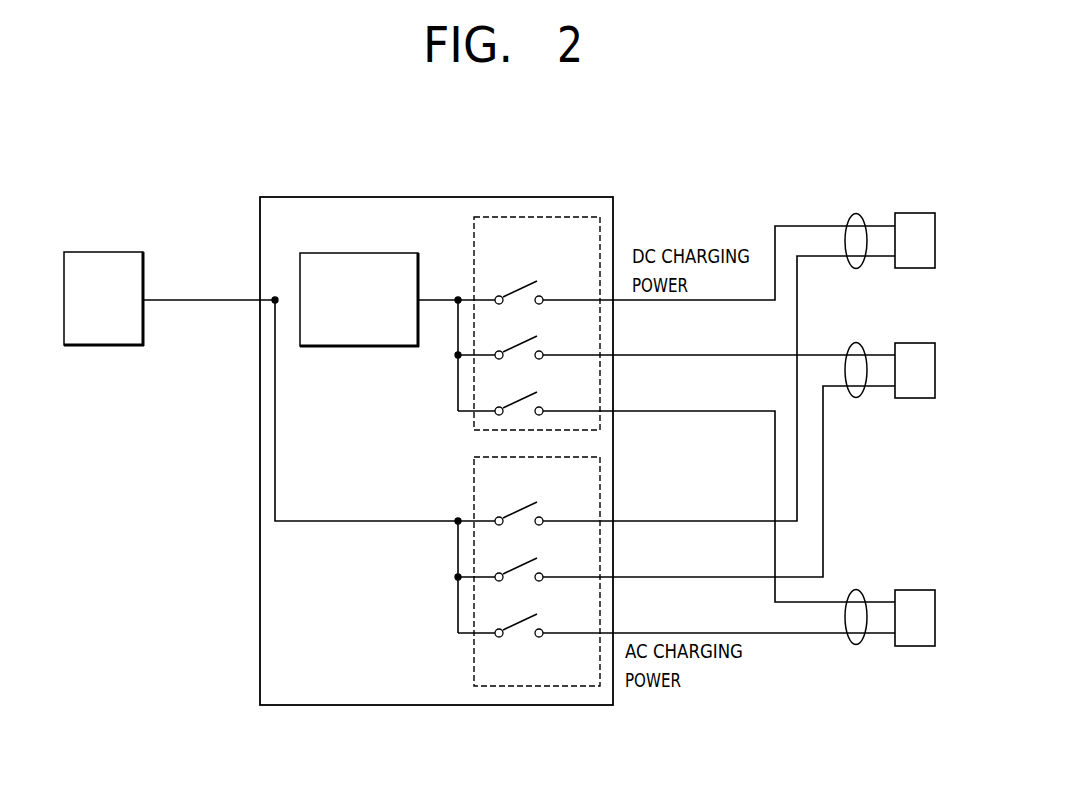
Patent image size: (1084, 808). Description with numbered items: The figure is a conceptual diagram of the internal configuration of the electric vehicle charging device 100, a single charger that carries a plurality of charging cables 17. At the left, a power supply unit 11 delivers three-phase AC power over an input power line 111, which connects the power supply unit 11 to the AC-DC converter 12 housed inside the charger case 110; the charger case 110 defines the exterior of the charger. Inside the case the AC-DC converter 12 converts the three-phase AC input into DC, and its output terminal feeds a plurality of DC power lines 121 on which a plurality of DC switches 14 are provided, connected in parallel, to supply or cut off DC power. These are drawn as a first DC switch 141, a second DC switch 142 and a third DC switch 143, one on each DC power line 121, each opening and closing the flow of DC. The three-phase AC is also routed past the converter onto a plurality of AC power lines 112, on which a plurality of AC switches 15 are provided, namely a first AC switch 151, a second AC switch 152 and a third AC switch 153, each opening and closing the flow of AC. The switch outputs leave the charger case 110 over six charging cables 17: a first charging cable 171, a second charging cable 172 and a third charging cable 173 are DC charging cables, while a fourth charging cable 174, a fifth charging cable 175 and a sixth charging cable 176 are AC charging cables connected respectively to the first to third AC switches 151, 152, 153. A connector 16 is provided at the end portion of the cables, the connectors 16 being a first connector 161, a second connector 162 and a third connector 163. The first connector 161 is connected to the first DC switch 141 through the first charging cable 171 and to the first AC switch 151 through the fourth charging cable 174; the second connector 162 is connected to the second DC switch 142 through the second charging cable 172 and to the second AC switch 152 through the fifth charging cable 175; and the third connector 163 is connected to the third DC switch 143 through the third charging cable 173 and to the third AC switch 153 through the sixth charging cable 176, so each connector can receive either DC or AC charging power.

The electric vehicle charging device 100 is at (477, 183).
The power supply unit 11 is at (104, 250).
The input power line 111 is at (221, 305).
The charger case 110 is at (397, 195).
The AC-DC converter 12 is at (345, 350).
The DC power lines 121 is at (437, 302).
The AC power lines 112 is at (490, 578).
The DC switches 14 is at (553, 207).
The first DC switch 141 is at (520, 288).
The second DC switch 142 is at (520, 343).
The third DC switch 143 is at (520, 399).
The AC switches 15 is at (560, 697).
The first AC switch 151 is at (520, 509).
The second AC switch 152 is at (520, 565).
The third AC switch 153 is at (520, 621).
The first charging cable 171 is at (650, 303).
The second charging cable 172 is at (650, 358).
The third charging cable 173 is at (650, 414).
The fourth charging cable 174 is at (650, 524).
The fifth charging cable 175 is at (650, 580).
The sixth charging cable 176 is at (772, 636).
The charging cables 17 is at (805, 209).
The connectors 16 is at (889, 196).
The first connector 161 is at (915, 212).
The second connector 162 is at (915, 342).
The third connector 163 is at (915, 589).